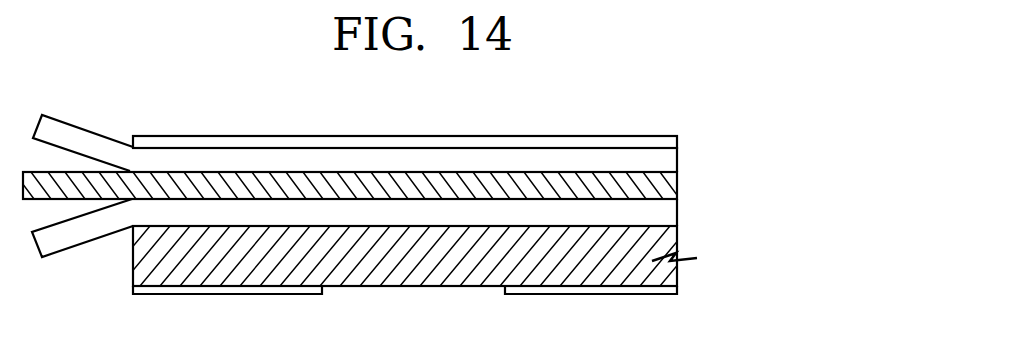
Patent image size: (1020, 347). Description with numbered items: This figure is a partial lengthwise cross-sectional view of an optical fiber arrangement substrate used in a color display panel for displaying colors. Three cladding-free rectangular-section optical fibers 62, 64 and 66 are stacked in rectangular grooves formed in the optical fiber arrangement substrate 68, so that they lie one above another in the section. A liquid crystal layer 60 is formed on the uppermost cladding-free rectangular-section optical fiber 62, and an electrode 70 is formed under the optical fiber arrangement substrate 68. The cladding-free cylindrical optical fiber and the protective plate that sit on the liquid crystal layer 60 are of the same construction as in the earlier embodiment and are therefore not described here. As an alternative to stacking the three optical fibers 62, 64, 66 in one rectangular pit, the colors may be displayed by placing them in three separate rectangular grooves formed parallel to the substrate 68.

The liquid crystal layer 60 is at (662, 144).
The cladding-free rectangular-section optical fiber 62 is at (662, 168).
The cladding-free rectangular-section optical fiber 64 is at (662, 193).
The cladding-free rectangular-section optical fiber 66 is at (660, 216).
The optical fiber arrangement substrate 68 is at (662, 248).
The electrode 70 is at (660, 293).